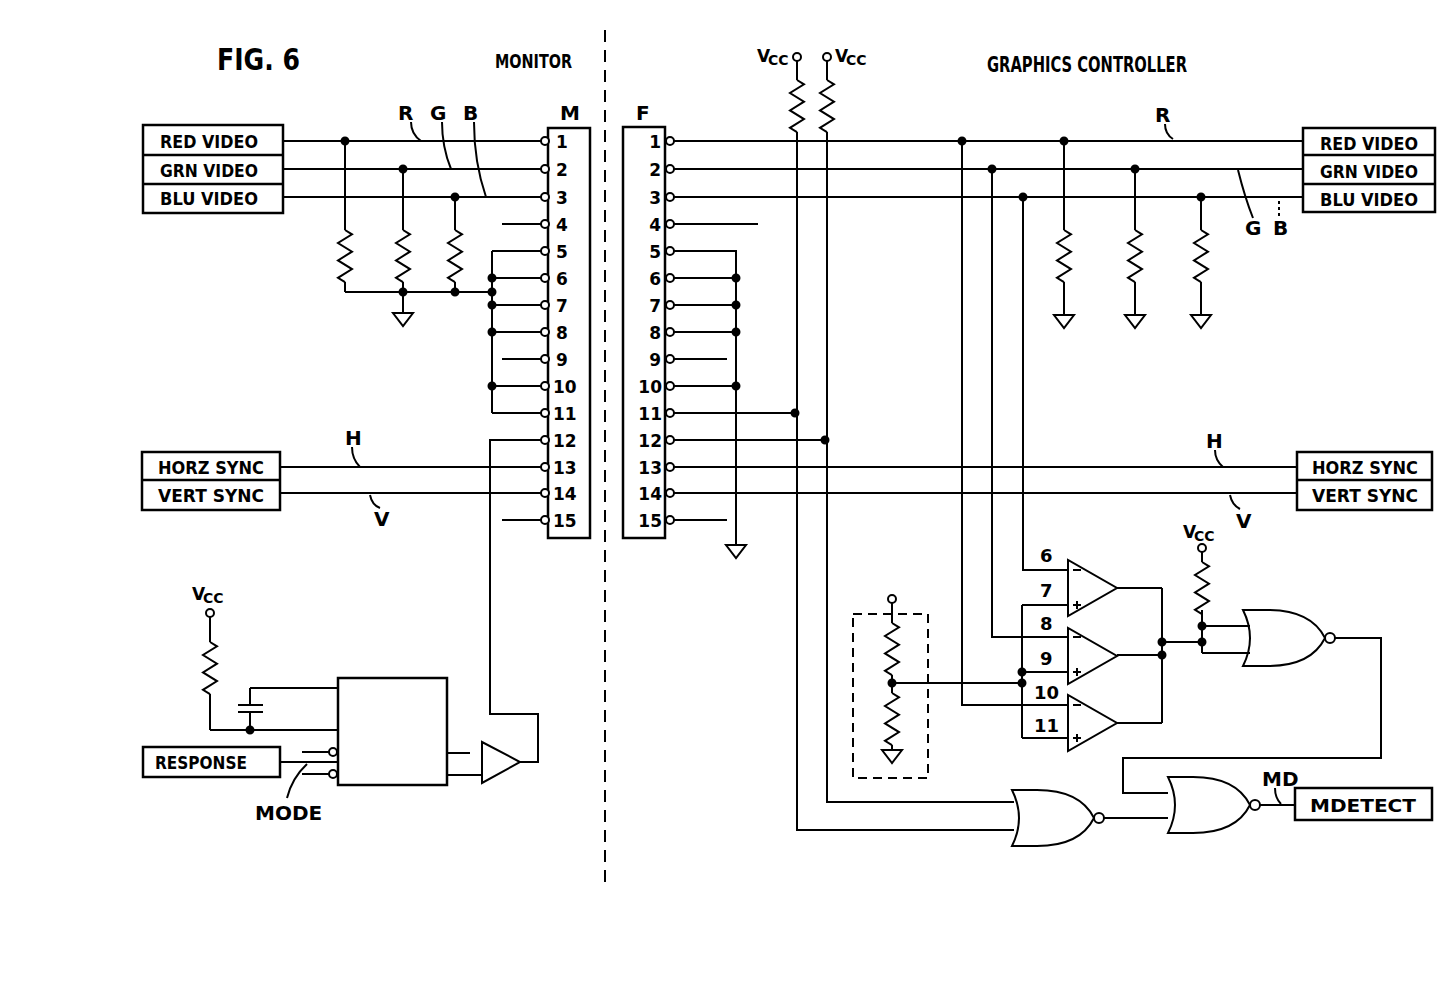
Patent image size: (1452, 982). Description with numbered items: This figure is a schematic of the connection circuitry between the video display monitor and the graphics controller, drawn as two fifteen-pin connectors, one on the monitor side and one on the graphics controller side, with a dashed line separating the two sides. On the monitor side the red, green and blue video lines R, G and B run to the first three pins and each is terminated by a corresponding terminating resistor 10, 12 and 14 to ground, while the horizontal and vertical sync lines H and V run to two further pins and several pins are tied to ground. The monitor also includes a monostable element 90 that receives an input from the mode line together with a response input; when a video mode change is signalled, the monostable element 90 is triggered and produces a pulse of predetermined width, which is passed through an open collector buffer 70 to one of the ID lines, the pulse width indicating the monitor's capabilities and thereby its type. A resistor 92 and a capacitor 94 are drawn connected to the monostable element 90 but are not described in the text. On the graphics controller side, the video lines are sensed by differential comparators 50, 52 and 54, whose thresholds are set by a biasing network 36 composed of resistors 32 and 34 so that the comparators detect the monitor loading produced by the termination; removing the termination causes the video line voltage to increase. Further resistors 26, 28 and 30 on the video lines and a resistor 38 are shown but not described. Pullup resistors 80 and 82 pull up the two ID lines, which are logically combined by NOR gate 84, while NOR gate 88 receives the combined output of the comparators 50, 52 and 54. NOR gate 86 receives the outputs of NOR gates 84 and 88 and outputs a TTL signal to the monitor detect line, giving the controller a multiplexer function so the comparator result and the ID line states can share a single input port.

The terminating resistor 10 is at (344, 255).
The terminating resistor 12 is at (400, 255).
The terminating resistor 14 is at (452, 255).
The red video pull-down resistor 26 is at (1072, 248).
The green video pull-down resistor 28 is at (1128, 258).
The blue video pull-down resistor 30 is at (1194, 258).
The resistor 32 is at (889, 651).
The resistor 34 is at (889, 719).
The biasing network 36 is at (917, 674).
The pull-up resistor 38 is at (1224, 583).
The differential comparator 50 is at (1098, 577).
The differential comparator 52 is at (1098, 645).
The differential comparator 54 is at (1098, 713).
The buffer 70 is at (505, 778).
The pullup resistor 80 is at (786, 98).
The pullup resistor 82 is at (834, 98).
The NOR gate 84 is at (1078, 841).
The NOR gate 86 is at (1233, 831).
The NOR gate 88 is at (1311, 622).
The monostable element 90 is at (426, 678).
The timing resistor 92 is at (218, 660).
The timing capacitor 94 is at (265, 712).